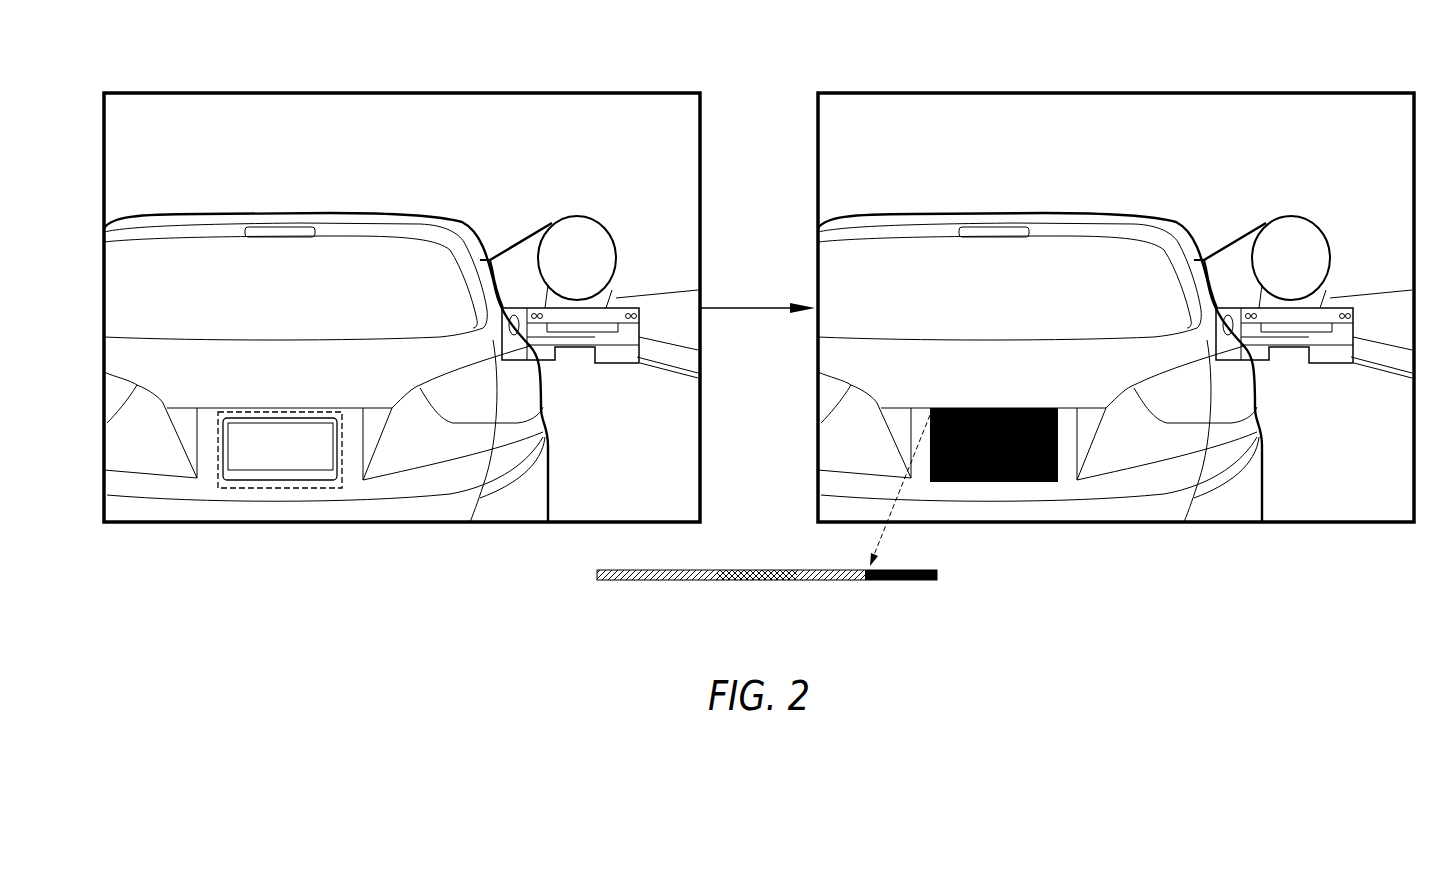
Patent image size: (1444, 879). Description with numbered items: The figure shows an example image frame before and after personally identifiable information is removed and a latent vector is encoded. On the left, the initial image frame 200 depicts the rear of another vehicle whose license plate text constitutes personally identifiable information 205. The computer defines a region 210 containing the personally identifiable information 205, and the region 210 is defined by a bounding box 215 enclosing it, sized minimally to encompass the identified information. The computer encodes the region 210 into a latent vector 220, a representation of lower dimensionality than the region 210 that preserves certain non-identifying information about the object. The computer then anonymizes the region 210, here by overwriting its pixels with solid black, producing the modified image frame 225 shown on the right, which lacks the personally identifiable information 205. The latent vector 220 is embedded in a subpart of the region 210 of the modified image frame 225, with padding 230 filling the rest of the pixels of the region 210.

The initial image frame 200 is at (633, 93).
The modified image frame 225 is at (1345, 93).
The personally identifiable information 205 is at (272, 482).
The region 210 is at (290, 482).
The bounding box 215 is at (320, 492).
The latent vector 220 is at (688, 582).
The padding 230 is at (1060, 442).